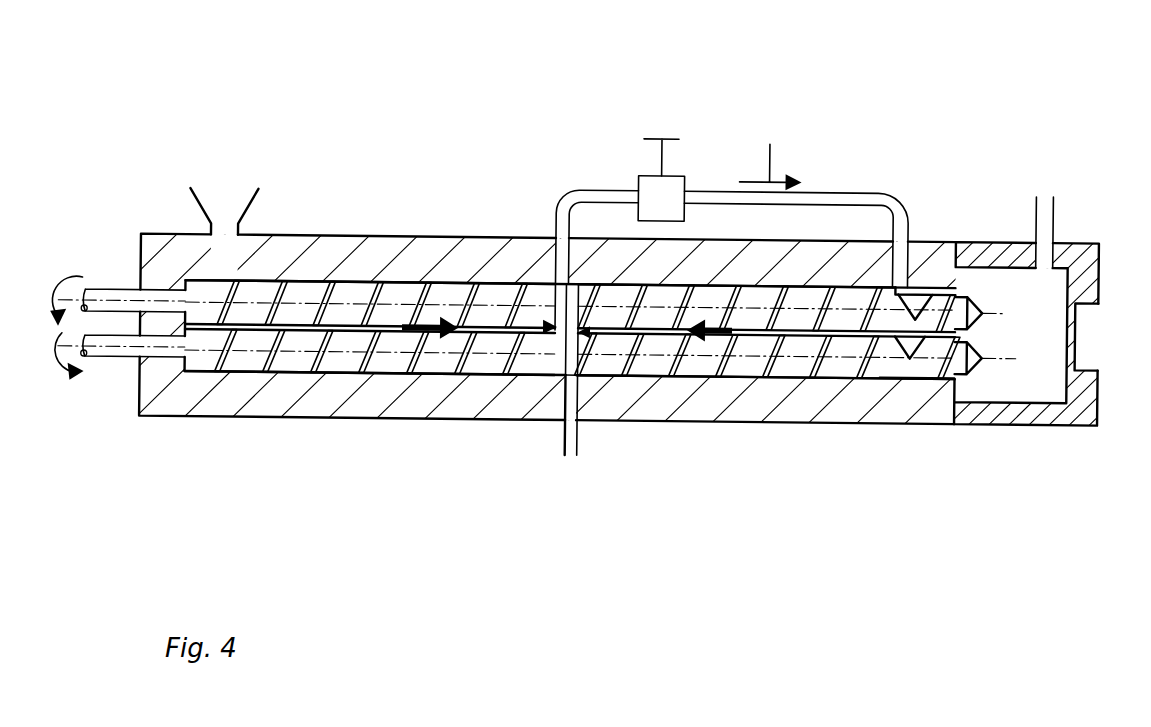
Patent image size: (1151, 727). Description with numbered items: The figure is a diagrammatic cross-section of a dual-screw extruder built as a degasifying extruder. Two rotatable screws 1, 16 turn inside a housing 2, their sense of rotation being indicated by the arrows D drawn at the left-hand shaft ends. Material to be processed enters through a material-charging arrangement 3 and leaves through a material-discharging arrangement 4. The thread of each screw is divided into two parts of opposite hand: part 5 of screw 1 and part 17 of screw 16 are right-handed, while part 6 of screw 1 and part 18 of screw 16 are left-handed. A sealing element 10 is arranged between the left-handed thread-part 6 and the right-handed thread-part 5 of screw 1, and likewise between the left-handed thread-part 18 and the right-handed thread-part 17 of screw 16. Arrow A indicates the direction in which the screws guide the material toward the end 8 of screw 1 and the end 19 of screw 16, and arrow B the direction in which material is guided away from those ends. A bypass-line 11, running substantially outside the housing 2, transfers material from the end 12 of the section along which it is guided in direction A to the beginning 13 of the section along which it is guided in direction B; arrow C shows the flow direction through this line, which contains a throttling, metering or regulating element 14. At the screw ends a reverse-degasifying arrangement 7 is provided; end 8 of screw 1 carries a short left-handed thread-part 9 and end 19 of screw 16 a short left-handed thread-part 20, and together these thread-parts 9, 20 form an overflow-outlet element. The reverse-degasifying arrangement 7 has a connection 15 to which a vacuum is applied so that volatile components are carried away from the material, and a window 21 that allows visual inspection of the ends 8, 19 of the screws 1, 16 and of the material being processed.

The screw 1 is at (900, 307).
The housing 2 is at (313, 258).
The material-charging arrangement 3 is at (222, 232).
The material-discharging arrangement 4 is at (572, 447).
The right-handed thread-part of screw 1 5 is at (821, 310).
The left-handed thread-part of screw 1 6 is at (373, 303).
The reverse-degasifying arrangement 7 is at (1083, 267).
The end of screw 1 8 is at (973, 312).
The short left-handed thread-part 9 is at (917, 297).
The sealing element 10 is at (553, 322).
The bypass-line 11 is at (567, 200).
The end of the section guided in direction A 12 is at (573, 313).
The beginning of the section guided in direction B 13 is at (903, 363).
The throttling, metering or regulating element 14 is at (667, 205).
The connection 15 is at (1046, 205).
The screw 16 is at (897, 333).
The right-handed thread-part of screw 16 17 is at (773, 353).
The left-handed thread-part of screw 16 18 is at (372, 352).
The end of screw 16 19 is at (973, 355).
The short left-handed thread-part 20 is at (933, 330).
The window 21 is at (1085, 343).
The arrow A is at (438, 337).
The arrow B is at (711, 337).
The arrow C is at (770, 149).
The arrows D is at (50, 282).